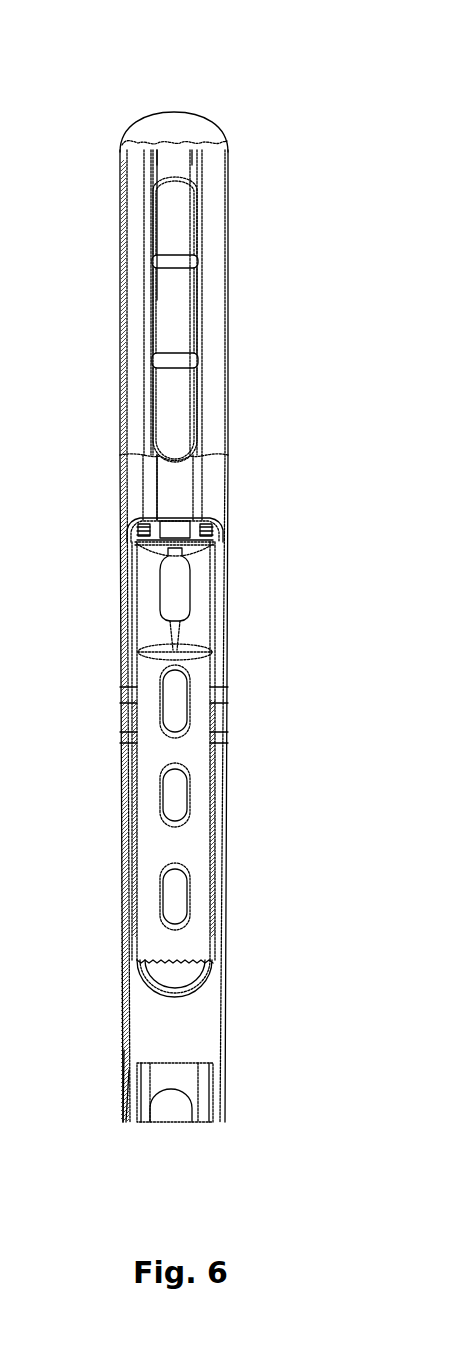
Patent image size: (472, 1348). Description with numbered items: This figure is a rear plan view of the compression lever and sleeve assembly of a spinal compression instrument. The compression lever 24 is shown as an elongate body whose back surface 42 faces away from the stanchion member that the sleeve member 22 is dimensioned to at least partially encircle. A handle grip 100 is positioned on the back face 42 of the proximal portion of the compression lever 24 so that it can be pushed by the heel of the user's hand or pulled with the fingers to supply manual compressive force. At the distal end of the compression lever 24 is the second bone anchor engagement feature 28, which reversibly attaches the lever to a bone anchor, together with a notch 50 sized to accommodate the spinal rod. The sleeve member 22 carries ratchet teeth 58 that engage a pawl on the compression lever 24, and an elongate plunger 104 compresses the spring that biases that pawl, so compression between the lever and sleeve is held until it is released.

The compression lever 24 is at (280, 97).
The back surface 42 is at (174, 168).
The handle grip 100 is at (174, 315).
The elongate plunger 104 is at (176, 527).
The ratchet teeth 58 is at (140, 531).
The sleeve member 22 is at (187, 745).
The second bone anchor engagement feature 28 is at (187, 1076).
The notch 50 is at (173, 1092).